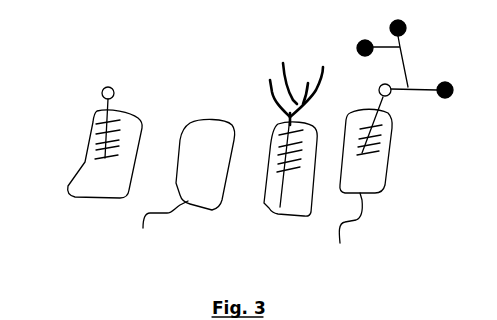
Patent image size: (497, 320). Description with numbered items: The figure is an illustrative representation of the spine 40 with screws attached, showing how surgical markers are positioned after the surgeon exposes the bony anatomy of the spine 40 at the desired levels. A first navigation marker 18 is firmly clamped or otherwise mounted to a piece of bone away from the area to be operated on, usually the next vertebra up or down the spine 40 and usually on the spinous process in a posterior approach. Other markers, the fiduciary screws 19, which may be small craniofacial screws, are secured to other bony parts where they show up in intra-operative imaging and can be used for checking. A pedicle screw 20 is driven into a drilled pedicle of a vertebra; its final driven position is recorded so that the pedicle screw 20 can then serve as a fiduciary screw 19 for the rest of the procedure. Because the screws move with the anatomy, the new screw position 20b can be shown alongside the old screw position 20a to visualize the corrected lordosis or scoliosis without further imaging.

The first navigation marker 18 is at (392, 120).
The fiduciary screw 19 is at (96, 111).
The pedicle screw 20 is at (254, 147).
The old screw position 20a is at (268, 97).
The new screw position 20b is at (282, 62).
The spine 40 is at (93, 203).